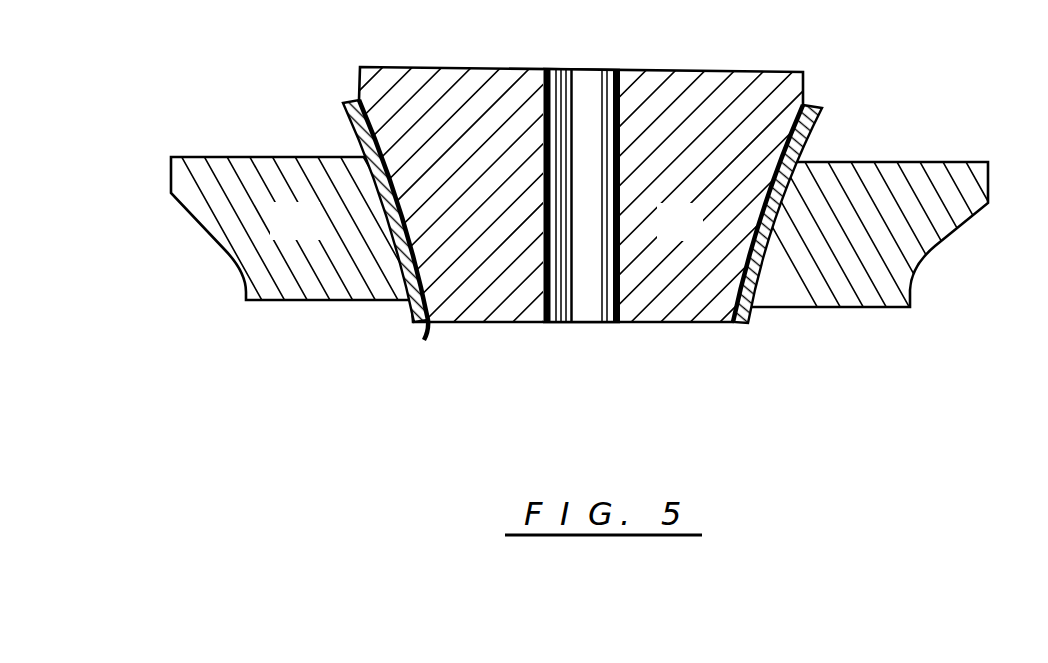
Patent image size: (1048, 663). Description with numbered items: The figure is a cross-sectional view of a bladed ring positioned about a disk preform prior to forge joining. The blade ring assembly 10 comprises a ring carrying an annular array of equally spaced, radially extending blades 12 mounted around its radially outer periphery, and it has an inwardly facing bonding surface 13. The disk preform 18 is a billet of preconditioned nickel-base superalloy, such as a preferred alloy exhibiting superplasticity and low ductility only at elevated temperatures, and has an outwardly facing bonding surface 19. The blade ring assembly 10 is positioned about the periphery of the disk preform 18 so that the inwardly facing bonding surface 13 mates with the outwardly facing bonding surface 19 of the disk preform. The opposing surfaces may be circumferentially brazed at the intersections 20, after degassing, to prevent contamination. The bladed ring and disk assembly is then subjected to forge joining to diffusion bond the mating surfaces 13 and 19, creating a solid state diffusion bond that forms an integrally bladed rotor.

The blade ring assembly 10 is at (955, 143).
The blades 12 is at (314, 236).
The inwardly facing bonding surface 13 is at (820, 136).
The disk preform 18 is at (698, 237).
The outwardly facing bonding surface 19 is at (776, 121).
The intersections 20 is at (350, 95).